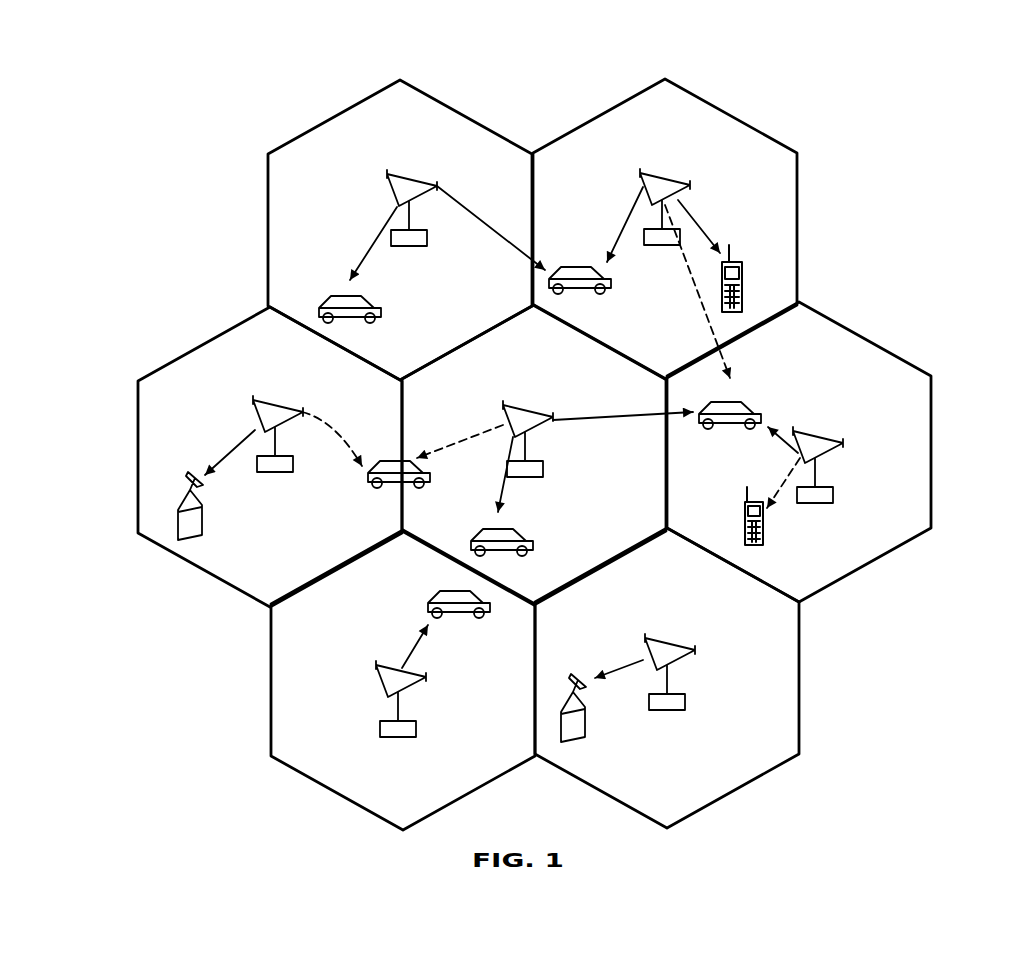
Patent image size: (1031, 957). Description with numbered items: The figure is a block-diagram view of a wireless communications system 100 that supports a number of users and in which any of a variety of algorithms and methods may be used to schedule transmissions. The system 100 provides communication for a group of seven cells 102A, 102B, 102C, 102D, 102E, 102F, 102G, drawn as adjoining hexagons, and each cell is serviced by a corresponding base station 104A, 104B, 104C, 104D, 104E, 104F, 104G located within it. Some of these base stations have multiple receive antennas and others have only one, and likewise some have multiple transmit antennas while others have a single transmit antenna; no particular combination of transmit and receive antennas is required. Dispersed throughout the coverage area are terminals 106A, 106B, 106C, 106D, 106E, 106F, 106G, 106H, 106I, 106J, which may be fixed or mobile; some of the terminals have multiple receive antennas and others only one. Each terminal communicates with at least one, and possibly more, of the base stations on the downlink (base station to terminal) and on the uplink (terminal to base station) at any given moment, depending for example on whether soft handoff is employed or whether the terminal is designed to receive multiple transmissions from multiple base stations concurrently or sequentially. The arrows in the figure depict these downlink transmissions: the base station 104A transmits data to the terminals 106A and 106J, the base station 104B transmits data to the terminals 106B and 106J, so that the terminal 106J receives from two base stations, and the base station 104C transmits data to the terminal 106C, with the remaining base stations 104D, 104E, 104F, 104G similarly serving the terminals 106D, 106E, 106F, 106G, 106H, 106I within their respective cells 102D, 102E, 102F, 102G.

The communications system 100 is at (850, 64).
The cell 102A is at (342, 112).
The cell 102B is at (723, 108).
The cell 102C is at (195, 346).
The cell 102D is at (568, 349).
The cell 102E is at (933, 446).
The cell 102F is at (272, 687).
The cell 102G is at (803, 648).
The base station 104A is at (397, 178).
The base station 104B is at (652, 175).
The base station 104C is at (262, 401).
The base station 104D is at (513, 412).
The base station 104E is at (807, 431).
The base station 104F is at (380, 667).
The base station 104G is at (655, 641).
The terminal 106A is at (347, 296).
The terminal 106B is at (728, 263).
The terminal 106C is at (192, 483).
The terminal 106D is at (497, 528).
The terminal 106E is at (738, 399).
The terminal 106F is at (455, 590).
The terminal 106G is at (578, 678).
The terminal 106H is at (387, 459).
The terminal 106I is at (743, 501).
The terminal 106J is at (582, 262).